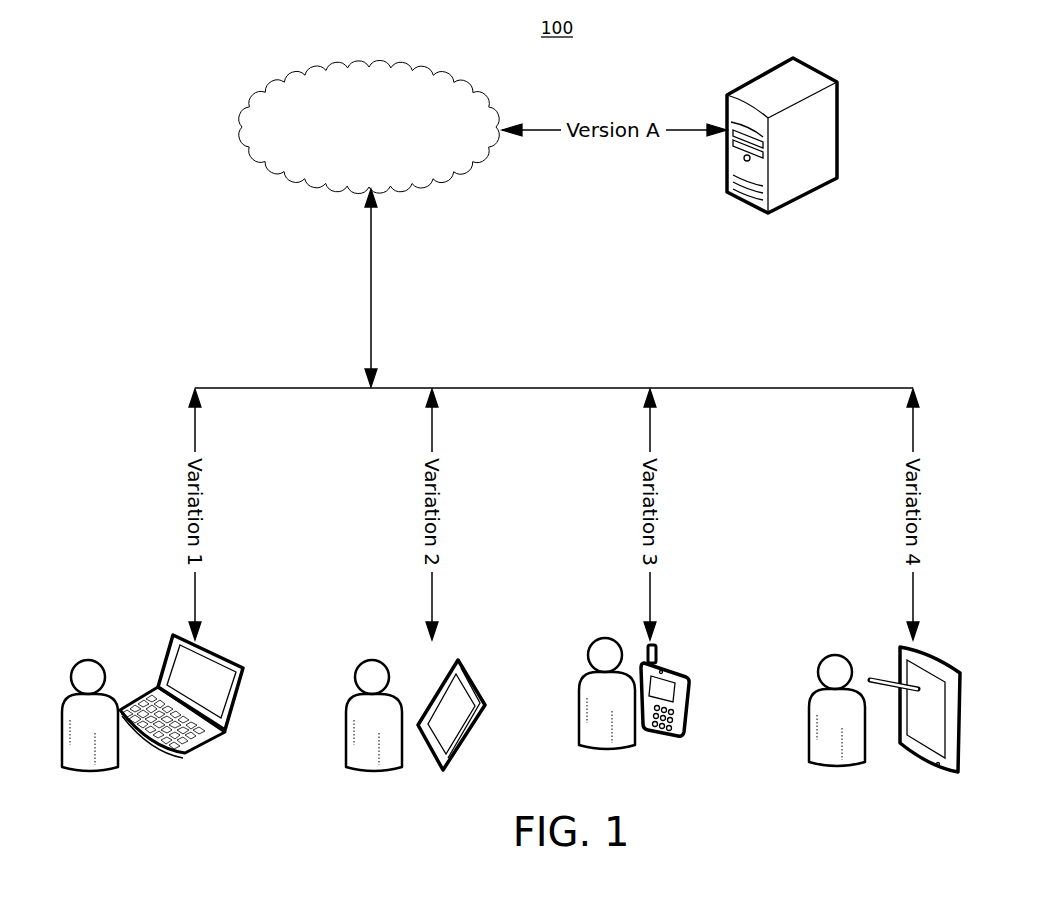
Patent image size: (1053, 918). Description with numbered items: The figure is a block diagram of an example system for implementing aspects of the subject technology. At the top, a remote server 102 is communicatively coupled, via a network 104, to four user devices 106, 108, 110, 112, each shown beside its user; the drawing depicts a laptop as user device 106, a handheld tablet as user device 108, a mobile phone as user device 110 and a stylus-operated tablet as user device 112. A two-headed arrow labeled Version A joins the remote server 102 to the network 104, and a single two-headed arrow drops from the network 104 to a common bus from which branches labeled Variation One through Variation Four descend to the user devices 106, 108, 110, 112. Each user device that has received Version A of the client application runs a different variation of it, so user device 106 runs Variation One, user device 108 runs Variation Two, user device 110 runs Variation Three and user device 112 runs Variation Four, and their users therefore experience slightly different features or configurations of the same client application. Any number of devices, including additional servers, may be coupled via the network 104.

The remote server 102 is at (837, 82).
The network 104 is at (243, 128).
The user device 106 is at (217, 690).
The user device 108 is at (476, 692).
The user device 110 is at (695, 679).
The user device 112 is at (951, 699).